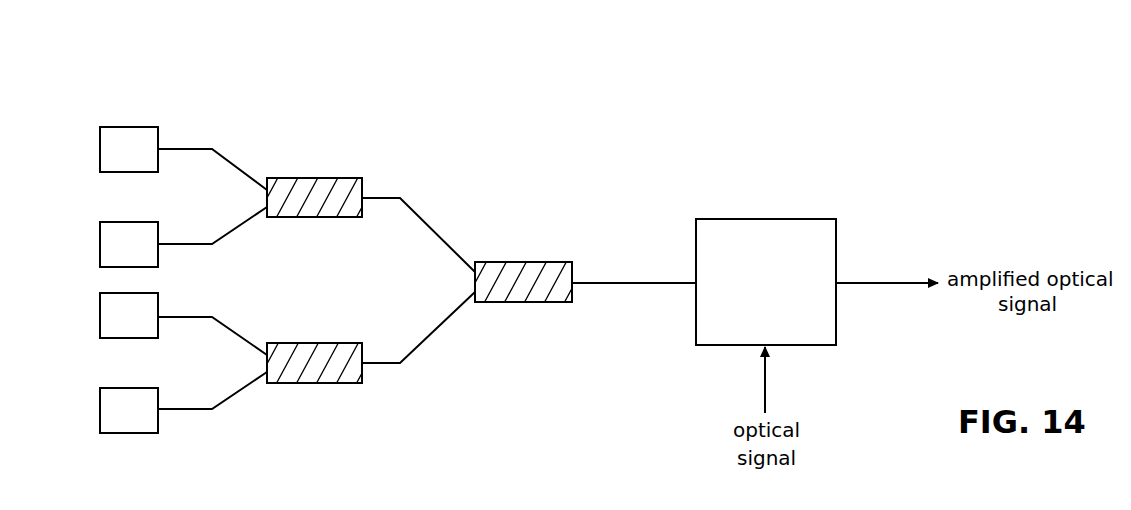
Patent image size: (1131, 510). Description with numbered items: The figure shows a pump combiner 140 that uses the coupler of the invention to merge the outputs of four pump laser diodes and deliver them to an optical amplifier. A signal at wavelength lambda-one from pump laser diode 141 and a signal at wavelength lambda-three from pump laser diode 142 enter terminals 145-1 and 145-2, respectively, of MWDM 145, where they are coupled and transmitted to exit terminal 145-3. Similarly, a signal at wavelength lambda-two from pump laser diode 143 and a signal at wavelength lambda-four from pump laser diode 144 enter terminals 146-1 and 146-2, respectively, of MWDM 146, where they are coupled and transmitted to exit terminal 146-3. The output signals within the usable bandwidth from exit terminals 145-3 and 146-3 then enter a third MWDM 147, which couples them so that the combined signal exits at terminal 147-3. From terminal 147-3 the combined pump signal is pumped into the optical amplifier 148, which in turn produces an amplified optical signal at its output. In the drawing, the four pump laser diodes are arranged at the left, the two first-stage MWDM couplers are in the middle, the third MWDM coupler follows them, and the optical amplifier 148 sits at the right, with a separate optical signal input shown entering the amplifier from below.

The pump combiner 140 is at (141, 90).
The pump laser diode 141 is at (100, 135).
The pump laser diode 142 is at (100, 230).
The pump laser diode 143 is at (100, 323).
The pump laser diode 144 is at (100, 417).
The MWDM 145 is at (320, 178).
The terminal 145-1 is at (196, 147).
The terminal 145-2 is at (229, 233).
The exit terminal 145-3 is at (403, 197).
The MWDM 146 is at (328, 343).
The terminal 146-1 is at (213, 315).
The terminal 146-2 is at (201, 411).
The exit terminal 146-3 is at (404, 365).
The MWDM 147 is at (530, 262).
The terminal 147-3 is at (640, 282).
The optical amplifier 148 is at (793, 228).